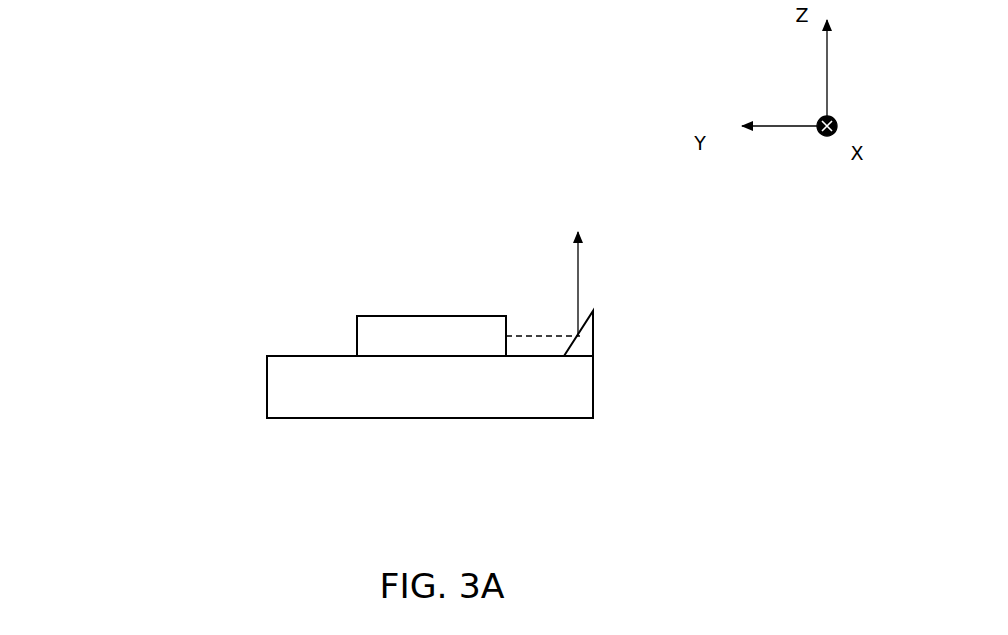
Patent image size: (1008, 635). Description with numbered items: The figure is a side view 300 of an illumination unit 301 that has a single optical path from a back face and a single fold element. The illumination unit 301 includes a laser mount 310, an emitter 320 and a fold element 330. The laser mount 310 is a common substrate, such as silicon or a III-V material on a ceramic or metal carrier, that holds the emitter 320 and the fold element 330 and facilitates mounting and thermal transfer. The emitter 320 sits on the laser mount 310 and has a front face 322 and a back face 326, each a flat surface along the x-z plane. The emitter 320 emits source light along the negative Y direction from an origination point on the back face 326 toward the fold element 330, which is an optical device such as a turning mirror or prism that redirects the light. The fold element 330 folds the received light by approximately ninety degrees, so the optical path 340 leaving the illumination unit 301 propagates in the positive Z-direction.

The side view 300 is at (62, 45).
The illumination unit 301 is at (118, 176).
The laser mount 310 is at (267, 384).
The emitter 320 is at (455, 315).
The front face 322 is at (356, 334).
The back face 326 is at (508, 334).
The fold element 330 is at (598, 347).
The optical path 340 is at (577, 255).